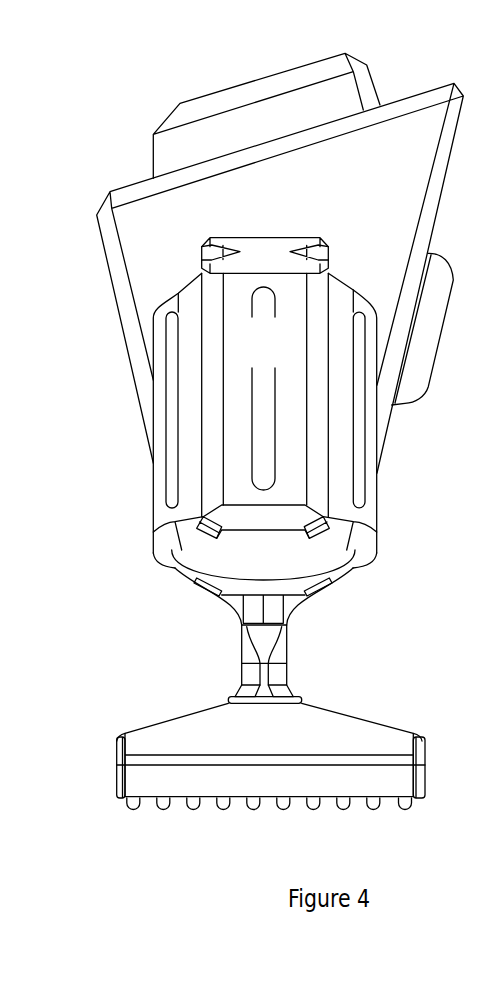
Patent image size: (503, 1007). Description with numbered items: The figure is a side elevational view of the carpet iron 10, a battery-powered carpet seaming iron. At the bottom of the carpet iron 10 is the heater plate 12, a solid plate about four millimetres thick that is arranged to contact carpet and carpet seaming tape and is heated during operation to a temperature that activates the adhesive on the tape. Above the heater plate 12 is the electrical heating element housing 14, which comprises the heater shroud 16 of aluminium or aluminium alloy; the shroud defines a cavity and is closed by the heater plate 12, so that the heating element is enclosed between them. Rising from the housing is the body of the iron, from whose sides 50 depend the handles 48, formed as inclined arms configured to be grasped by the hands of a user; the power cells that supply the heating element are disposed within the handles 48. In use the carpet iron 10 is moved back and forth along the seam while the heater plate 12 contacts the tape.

The carpet iron 10 is at (76, 67).
The heater plate 12 is at (181, 821).
The electrical heating element housing 14 is at (428, 703).
The heater shroud 16 is at (130, 732).
The handles 48 is at (268, 357).
The sides 50 is at (383, 196).